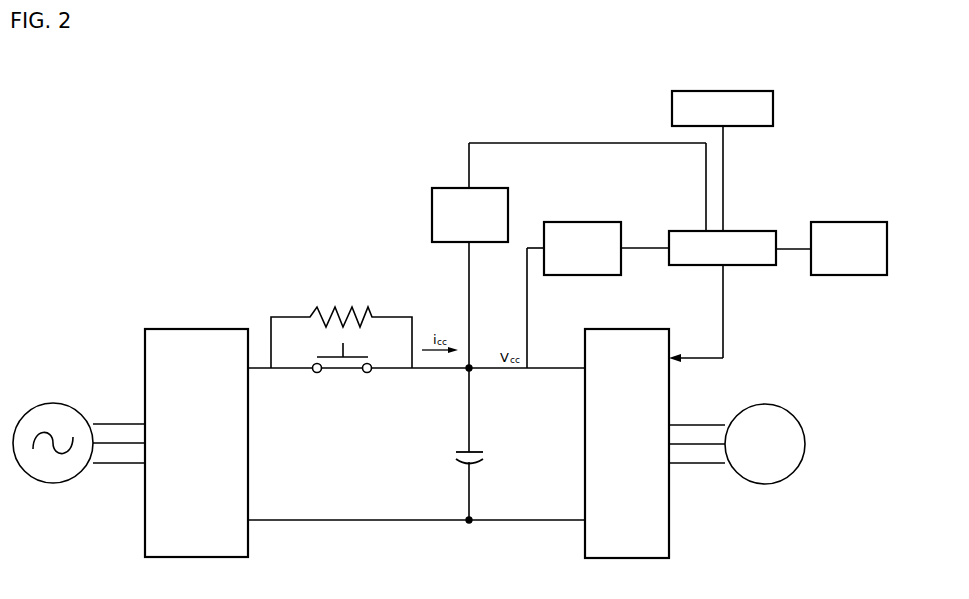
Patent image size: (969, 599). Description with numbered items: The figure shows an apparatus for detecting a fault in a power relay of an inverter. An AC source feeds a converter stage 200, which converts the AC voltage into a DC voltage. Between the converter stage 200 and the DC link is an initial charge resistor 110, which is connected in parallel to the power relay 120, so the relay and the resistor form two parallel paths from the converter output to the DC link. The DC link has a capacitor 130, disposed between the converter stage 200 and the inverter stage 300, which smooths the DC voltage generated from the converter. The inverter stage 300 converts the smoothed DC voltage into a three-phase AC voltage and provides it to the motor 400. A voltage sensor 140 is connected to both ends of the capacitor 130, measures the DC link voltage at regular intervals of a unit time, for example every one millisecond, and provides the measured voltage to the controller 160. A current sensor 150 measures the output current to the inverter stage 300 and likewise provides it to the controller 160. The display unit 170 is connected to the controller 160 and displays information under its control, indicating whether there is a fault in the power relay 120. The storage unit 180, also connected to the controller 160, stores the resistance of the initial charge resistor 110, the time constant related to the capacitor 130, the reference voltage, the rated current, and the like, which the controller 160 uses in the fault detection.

The initial charge resistor 110 is at (337, 306).
The power relay 120 is at (332, 359).
The capacitor 130 is at (462, 452).
The voltage sensor 140 is at (438, 188).
The current sensor 150 is at (583, 222).
The controller 160 is at (763, 231).
The display unit 170 is at (848, 222).
The storage unit 180 is at (723, 91).
The converter stage 200 is at (196, 329).
The inverter stage 300 is at (669, 383).
The motor 400 is at (765, 404).